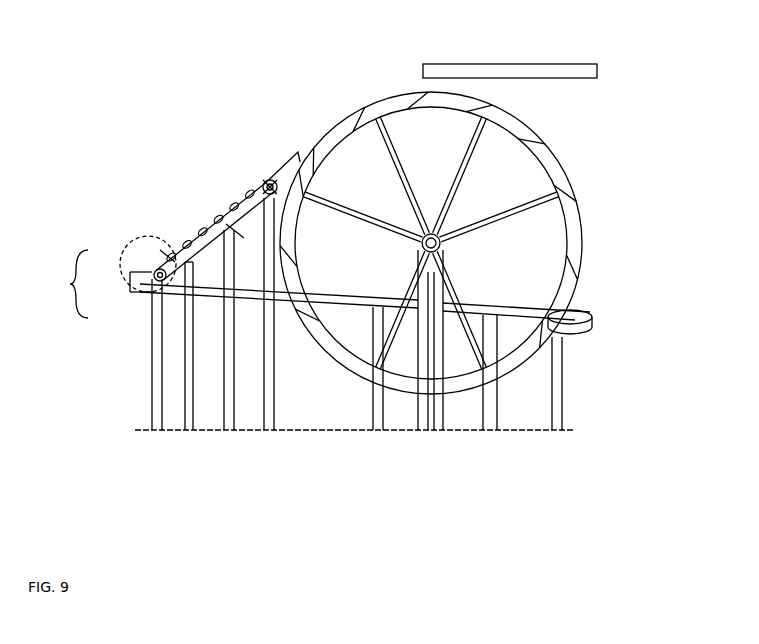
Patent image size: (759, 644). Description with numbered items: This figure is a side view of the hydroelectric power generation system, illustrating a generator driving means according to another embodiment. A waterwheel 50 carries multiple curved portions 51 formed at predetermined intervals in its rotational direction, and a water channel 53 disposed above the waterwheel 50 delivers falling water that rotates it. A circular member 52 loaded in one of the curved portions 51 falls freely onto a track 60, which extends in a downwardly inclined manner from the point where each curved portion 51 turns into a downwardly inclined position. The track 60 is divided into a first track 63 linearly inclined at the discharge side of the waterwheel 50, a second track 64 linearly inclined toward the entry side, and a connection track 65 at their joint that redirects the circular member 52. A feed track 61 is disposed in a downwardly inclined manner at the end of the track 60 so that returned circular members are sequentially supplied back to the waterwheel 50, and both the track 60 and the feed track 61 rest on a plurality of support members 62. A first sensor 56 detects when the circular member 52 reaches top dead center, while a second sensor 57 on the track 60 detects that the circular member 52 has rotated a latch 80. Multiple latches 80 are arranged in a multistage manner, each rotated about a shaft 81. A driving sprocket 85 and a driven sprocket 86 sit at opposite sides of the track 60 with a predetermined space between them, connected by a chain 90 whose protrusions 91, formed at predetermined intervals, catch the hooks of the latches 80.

The waterwheel 50 is at (573, 186).
The curved portions 51 is at (565, 175).
The circular member 52 is at (562, 340).
The water channel 53 is at (492, 72).
The first sensor 56 is at (401, 92).
The second sensor 57 is at (150, 246).
The track 60 is at (45, 296).
The feed track 61 is at (592, 320).
The support members 62 is at (228, 432).
The first track 63 is at (127, 266).
The second track 64 is at (145, 300).
The connection track 65 is at (130, 284).
The latch 80 is at (252, 186).
The shaft 81 is at (200, 232).
The driving sprocket 85 is at (170, 255).
The driven sprocket 86 is at (270, 180).
The chain 90 is at (195, 256).
The protrusions 91 is at (236, 222).